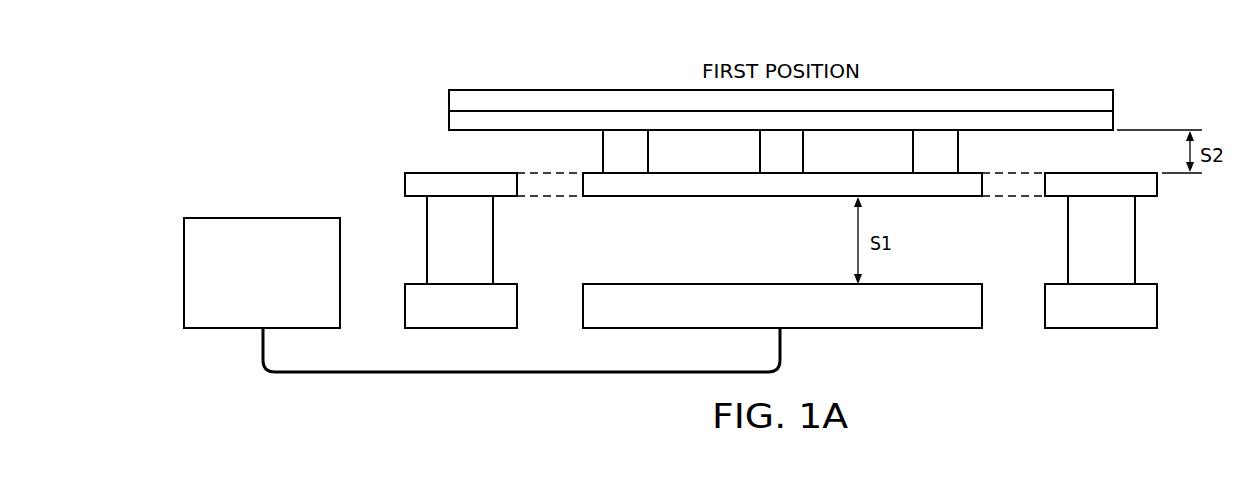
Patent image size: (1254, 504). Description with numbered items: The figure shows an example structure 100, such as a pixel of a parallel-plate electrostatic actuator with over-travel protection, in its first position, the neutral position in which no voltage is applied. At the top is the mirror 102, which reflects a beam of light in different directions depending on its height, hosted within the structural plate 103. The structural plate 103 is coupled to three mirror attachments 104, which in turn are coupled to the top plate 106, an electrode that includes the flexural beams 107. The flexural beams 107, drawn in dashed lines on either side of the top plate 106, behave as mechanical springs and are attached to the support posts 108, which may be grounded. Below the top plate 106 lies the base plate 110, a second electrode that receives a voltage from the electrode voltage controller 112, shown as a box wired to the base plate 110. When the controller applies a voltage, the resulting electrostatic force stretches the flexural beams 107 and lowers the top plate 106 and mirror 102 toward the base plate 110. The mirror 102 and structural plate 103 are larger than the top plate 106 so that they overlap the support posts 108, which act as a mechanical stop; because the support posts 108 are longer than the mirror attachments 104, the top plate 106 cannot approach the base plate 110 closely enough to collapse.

The structure 100 is at (291, 77).
The mirror 102 is at (457, 100).
The structural plate 103 is at (1105, 120).
The mirror attachments 104 is at (603, 152).
The top plate 106 is at (780, 192).
The flexural beams 107 is at (548, 197).
The support posts 108 is at (427, 240).
The base plate 110 is at (813, 330).
The electrode voltage controller 112 is at (183, 273).